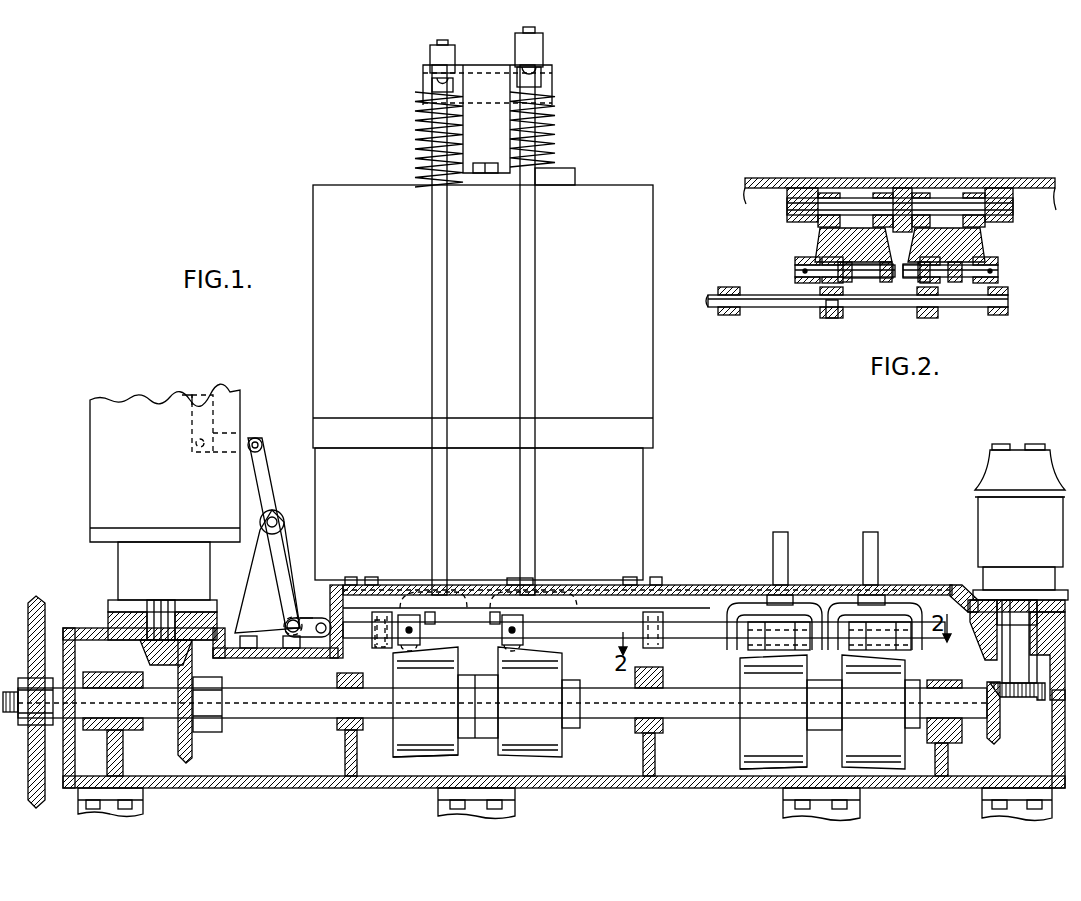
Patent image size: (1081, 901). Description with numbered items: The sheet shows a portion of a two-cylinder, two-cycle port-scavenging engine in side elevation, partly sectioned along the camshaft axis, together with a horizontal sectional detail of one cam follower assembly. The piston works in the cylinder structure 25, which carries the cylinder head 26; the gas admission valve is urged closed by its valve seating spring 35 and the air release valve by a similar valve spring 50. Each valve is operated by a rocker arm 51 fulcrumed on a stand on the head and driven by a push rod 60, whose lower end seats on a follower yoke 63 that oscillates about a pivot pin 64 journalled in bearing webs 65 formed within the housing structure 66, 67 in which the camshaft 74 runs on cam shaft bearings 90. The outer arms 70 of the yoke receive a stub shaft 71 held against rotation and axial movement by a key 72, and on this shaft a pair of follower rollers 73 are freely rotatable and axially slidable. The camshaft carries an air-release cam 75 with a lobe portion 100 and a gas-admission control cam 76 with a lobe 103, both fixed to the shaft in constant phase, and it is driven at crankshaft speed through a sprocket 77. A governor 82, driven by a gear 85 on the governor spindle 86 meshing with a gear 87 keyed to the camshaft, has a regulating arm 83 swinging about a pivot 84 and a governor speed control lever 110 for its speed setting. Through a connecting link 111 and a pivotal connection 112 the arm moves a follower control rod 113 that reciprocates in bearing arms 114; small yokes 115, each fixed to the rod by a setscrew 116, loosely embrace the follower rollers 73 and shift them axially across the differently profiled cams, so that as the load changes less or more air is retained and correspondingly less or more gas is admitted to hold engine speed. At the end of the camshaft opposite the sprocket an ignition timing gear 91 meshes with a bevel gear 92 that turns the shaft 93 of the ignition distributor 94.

In FIG. 1, the cylinder structure 25 is at (399, 484).
In FIG. 1, the cylinder head 26 is at (325, 222).
In FIG. 1, the valve seating spring 35 is at (555, 146).
In FIG. 1, the valve spring 50 is at (416, 137).
In FIG. 1, the rocker arm 51 is at (515, 49).
In FIG. 1, the push rod 60 is at (520, 287).
In FIG. 1, the follower yoke 63 is at (505, 592).
In FIG. 2, the follower yoke 63 is at (815, 240).
In FIG. 2, the pivot pin 64 is at (790, 207).
In FIG. 2, the bearing webs 65 is at (795, 188).
In FIG. 1, the housing structure 66 is at (720, 587).
In FIG. 2, the housing structure 66 is at (862, 178).
In FIG. 1, the housing structure 67 is at (620, 787).
In FIG. 2, the arms of the yoke 70 is at (795, 262).
In FIG. 2, the stub shaft 71 is at (962, 279).
In FIG. 2, the key 72 is at (795, 271).
In FIG. 1, the follower rollers 73 is at (752, 628).
In FIG. 2, the follower rollers 73 is at (835, 258).
In FIG. 1, the camshaft 74 is at (296, 717).
In FIG. 1, the air-release cam 75 is at (420, 750).
In FIG. 1, the gas-admission control cam 76 is at (556, 752).
In FIG. 1, the sprocket 77 is at (30, 772).
In FIG. 1, the governor 82 is at (100, 481).
In FIG. 1, the regulating arm 83 is at (265, 488).
In FIG. 1, the pivot 84 is at (284, 520).
In FIG. 1, the gear 85 is at (142, 655).
In FIG. 1, the governor spindle 86 is at (162, 620).
In FIG. 1, the gear 87 is at (192, 750).
In FIG. 1, the cam shaft bearings 90 is at (118, 738).
In FIG. 1, the ignition timing gear 91 is at (996, 740).
In FIG. 1, the bevel gear 92 is at (1036, 700).
In FIG. 1, the shaft 93 is at (1012, 636).
In FIG. 1, the ignition distributor 94 is at (1020, 548).
In FIG. 1, the lobe portion 100 is at (440, 652).
In FIG. 1, the lobe 103 is at (525, 652).
In FIG. 1, the governor speed control lever 110 is at (188, 400).
In FIG. 1, the connecting link 111 is at (313, 617).
In FIG. 1, the pivotal connection 112 is at (318, 650).
In FIG. 1, the follower control rod 113 is at (600, 633).
In FIG. 2, the follower control rod 113 is at (778, 306).
In FIG. 1, the bearing arms 114 is at (374, 645).
In FIG. 2, the bearing arms 114 is at (718, 316).
In FIG. 1, the yokes 115 is at (405, 614).
In FIG. 2, the yokes 115 is at (828, 319).
In FIG. 1, the setscrew 116 is at (420, 633).
In FIG. 2, the setscrew 116 is at (836, 319).